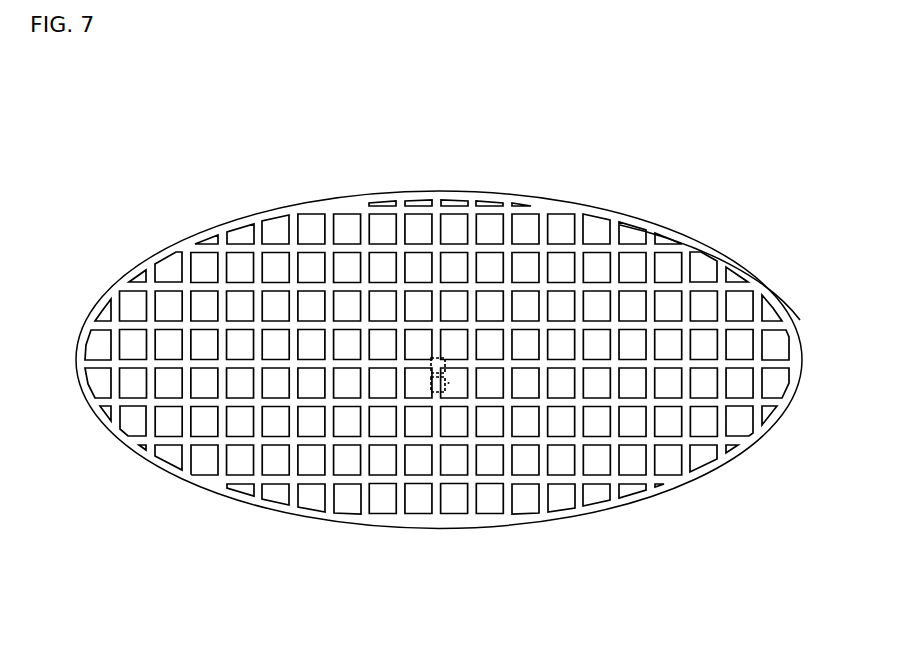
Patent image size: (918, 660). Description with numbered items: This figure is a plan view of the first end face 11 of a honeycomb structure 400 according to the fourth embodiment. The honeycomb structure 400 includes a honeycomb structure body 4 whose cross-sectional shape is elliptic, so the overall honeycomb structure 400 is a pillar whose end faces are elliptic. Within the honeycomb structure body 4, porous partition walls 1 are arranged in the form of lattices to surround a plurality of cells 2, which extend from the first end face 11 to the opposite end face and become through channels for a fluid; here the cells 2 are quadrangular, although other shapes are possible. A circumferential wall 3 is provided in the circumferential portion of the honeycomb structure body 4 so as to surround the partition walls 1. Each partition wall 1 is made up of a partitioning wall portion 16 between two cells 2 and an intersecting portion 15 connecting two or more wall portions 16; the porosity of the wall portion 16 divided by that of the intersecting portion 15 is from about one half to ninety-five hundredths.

The honeycomb structure 400 is at (816, 118).
The partition wall 1 is at (508, 267).
The cell 2 is at (562, 272).
The circumferential wall 3 is at (717, 465).
The honeycomb structure body 4 is at (757, 271).
The first end face 11 is at (220, 221).
The intersecting portion 15 is at (431, 366).
The partitioning wall portion 16 is at (431, 385).